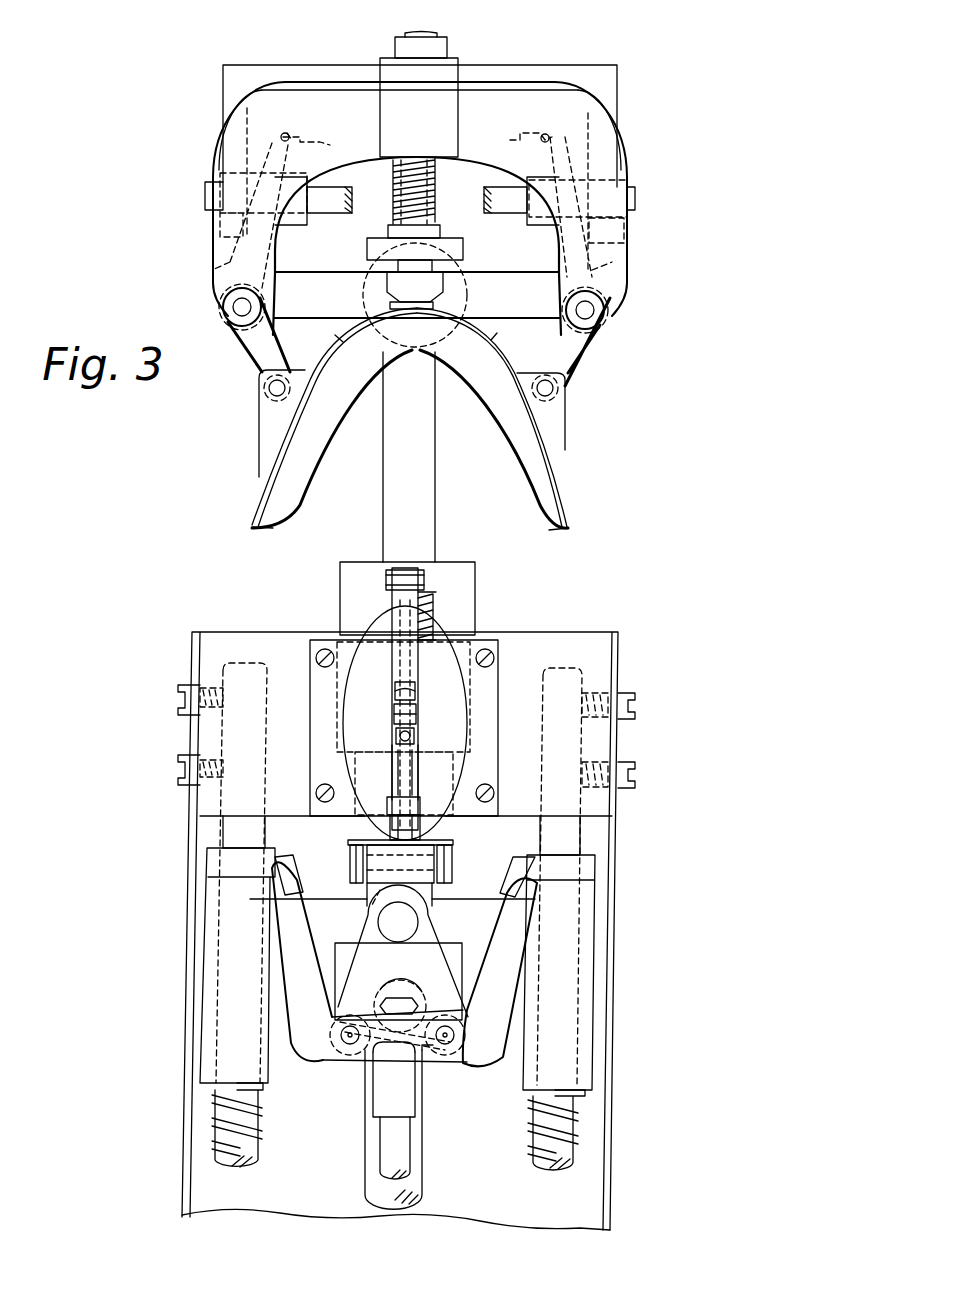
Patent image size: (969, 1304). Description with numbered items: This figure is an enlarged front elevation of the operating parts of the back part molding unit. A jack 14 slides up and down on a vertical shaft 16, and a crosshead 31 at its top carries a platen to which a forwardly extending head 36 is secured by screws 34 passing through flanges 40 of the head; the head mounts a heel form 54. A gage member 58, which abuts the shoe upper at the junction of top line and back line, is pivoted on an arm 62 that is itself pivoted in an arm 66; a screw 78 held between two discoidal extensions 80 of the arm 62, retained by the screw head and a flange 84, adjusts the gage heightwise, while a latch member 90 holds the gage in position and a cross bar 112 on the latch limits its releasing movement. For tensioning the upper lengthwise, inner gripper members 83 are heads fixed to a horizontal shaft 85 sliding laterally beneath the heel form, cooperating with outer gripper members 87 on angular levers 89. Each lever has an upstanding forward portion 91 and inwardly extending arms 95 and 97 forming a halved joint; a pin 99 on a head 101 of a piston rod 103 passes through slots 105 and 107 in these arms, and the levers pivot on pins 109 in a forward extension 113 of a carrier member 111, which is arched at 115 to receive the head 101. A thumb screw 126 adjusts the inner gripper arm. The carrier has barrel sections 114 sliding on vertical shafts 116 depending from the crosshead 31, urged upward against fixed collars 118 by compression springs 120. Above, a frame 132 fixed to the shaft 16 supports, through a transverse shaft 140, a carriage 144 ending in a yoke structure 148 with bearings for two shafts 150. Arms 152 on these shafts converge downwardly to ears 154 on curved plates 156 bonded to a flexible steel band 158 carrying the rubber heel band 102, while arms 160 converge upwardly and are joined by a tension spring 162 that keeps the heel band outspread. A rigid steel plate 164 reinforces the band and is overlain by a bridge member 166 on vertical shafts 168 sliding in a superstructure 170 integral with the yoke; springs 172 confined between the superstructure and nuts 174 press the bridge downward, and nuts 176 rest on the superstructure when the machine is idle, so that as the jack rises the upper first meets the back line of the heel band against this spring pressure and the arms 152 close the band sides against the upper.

The jack 14 is at (190, 980).
The vertical shaft 16 is at (434, 412).
The crosshead 31 is at (218, 630).
The screws 34 is at (322, 650).
The head 36 is at (529, 643).
The flanges 40 is at (316, 711).
The heel form 54 is at (437, 626).
The gage member 58 is at (390, 577).
The arm 62 is at (410, 566).
The arm 66 is at (420, 780).
The screw 78 is at (412, 704).
The discoidal forward extensions 80 is at (398, 722).
The inner gripper members 83 is at (352, 858).
The flange 84 is at (415, 737).
The horizontal shaft 85 is at (372, 896).
The outer gripper members 87 is at (302, 873).
The angular levers 89 is at (322, 1112).
The latch member 90 is at (392, 826).
The upstanding forward portion 91 is at (286, 950).
The arm 95 is at (372, 1054).
The arm 97 is at (425, 1062).
The pin 99 is at (398, 990).
The head 101 is at (405, 1103).
The heel band 102 is at (496, 484).
The piston rod 103 is at (400, 1155).
The slot 105 is at (415, 1011).
The slot 107 is at (380, 1011).
The pins 109 is at (341, 1040).
The carrier member 111 is at (512, 937).
The cross bar 112 is at (421, 806).
The forward extension 113 is at (340, 970).
The barrel sections 114 is at (205, 926).
The arch 115 is at (407, 987).
The vertical shafts 116 is at (230, 830).
The fixed collars 118 is at (215, 866).
The compression springs 120 is at (215, 1110).
The thumb screw 126 is at (390, 924).
The frame 132 is at (288, 74).
The transverse shaft 140 is at (326, 208).
The carriage 144 is at (192, 234).
The yoke structure 148 is at (543, 103).
The shafts 150 is at (222, 306).
The arms 152 is at (256, 362).
The ears 154 is at (266, 423).
The curved plates 156 is at (258, 493).
The flexible steel band 158 is at (322, 402).
The arms 160 is at (233, 268).
The tension spring 162 is at (312, 133).
The rigid steel plate 164 is at (427, 305).
The bridge member 166 is at (395, 282).
The vertical shafts 168 is at (437, 172).
The superstructure 170 is at (392, 70).
The spring 172 is at (443, 198).
The nut 174 is at (441, 233).
The nuts 176 is at (448, 42).